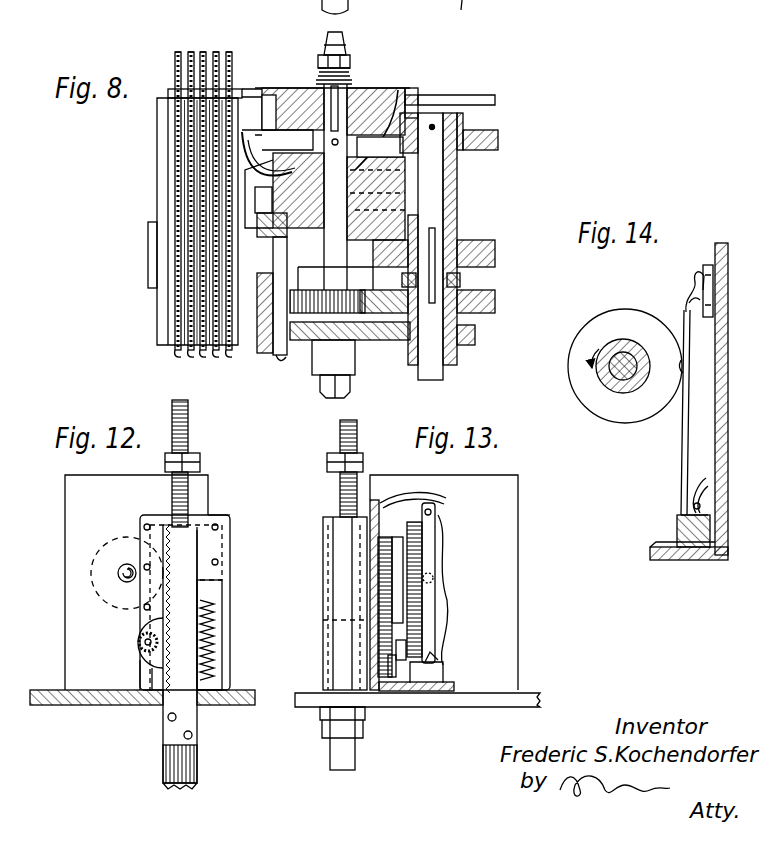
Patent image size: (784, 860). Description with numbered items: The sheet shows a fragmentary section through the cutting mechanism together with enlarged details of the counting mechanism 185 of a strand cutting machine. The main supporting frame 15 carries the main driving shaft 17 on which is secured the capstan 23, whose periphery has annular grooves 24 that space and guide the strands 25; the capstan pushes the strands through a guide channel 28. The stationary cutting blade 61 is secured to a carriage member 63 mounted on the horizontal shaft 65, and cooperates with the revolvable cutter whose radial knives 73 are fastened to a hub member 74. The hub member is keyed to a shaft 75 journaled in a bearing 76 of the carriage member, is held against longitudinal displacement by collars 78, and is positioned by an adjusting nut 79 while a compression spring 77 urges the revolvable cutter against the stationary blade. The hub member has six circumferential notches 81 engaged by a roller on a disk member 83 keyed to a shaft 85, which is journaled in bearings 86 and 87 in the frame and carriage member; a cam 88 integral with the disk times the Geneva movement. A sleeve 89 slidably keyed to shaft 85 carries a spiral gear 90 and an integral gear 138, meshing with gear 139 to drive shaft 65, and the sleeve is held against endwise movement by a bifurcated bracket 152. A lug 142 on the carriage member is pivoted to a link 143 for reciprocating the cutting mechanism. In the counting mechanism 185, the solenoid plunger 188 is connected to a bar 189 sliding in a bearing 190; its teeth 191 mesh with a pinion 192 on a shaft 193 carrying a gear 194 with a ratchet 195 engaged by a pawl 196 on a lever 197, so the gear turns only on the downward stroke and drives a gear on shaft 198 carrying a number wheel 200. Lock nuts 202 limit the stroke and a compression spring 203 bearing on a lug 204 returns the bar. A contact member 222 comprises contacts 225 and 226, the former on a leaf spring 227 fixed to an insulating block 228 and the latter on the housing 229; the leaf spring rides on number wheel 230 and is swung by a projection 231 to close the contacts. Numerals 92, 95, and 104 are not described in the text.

In FIG. 8, the main supporting frame 15 is at (312, 342).
In FIG. 12, the main supporting frame 15 is at (112, 705).
In FIG. 13, the main supporting frame 15 is at (488, 697).
In FIG. 8, the main driving shaft 17 is at (366, 338).
In FIG. 8, the capstan 23 is at (158, 208).
In FIG. 8, the annular grooves 24 is at (180, 352).
In FIG. 8, the strands 25 is at (229, 52).
In FIG. 8, the guide channel 28 is at (175, 182).
In FIG. 8, the stationary cutting blade 61 is at (171, 90).
In FIG. 8, the carriage member 63 is at (386, 103).
In FIG. 8, the horizontal shaft 65 is at (320, 50).
In FIG. 8, the knives 73 is at (242, 90).
In FIG. 8, the hub member 74 is at (404, 100).
In FIG. 8, the shaft 75 is at (400, 200).
In FIG. 8, the bearing 76 is at (415, 203).
In FIG. 8, the compression spring 77 is at (392, 88).
In FIG. 8, the collars 78 is at (300, 143).
In FIG. 8, the adjusting nut 79 is at (342, 73).
In FIG. 8, the circumferential notches 81 is at (263, 95).
In FIG. 8, the disk member 83 is at (486, 142).
In FIG. 8, the shaft 85 is at (436, 378).
In FIG. 8, the bearing 86 is at (456, 340).
In FIG. 8, the bearing 87 is at (456, 172).
In FIG. 8, the cam 88 is at (463, 122).
In FIG. 8, the sleeve 89 is at (460, 275).
In FIG. 8, the spiral gear 90 is at (494, 258).
In FIG. 8, the part 92 is at (484, 12).
In FIG. 8, the part 95 is at (434, 6).
In FIG. 8, the part 104 is at (532, 6).
In FIG. 8, the gear 138 is at (494, 308).
In FIG. 8, the gear 139 is at (318, 378).
In FIG. 8, the lug 142 is at (275, 250).
In FIG. 8, the link 143 is at (270, 350).
In FIG. 8, the bifurcated bracket 152 is at (460, 288).
In FIG. 12, the counting mechanism 185 is at (218, 506).
In FIG. 13, the counting mechanism 185 is at (521, 490).
In FIG. 12, the plunger 188 is at (198, 765).
In FIG. 13, the plunger 188 is at (343, 765).
In FIG. 12, the bar 189 is at (188, 643).
In FIG. 12, the bearing 190 is at (214, 690).
In FIG. 13, the bearing 190 is at (342, 673).
In FIG. 12, the teeth 191 is at (160, 527).
In FIG. 12, the pinion 192 is at (146, 660).
In FIG. 12, the shaft 193 is at (142, 643).
In FIG. 13, the gear 194 is at (395, 682).
In FIG. 13, the ratchet 195 is at (392, 680).
In FIG. 13, the pawl 196 is at (402, 680).
In FIG. 13, the lever 197 is at (381, 537).
In FIG. 14, the shaft 198 is at (617, 387).
In FIG. 12, the shaft 198 is at (125, 573).
In FIG. 13, the shaft 198 is at (428, 560).
In FIG. 13, the number wheel 200 is at (404, 533).
In FIG. 12, the lock nuts 202 is at (201, 470).
In FIG. 13, the lock nuts 202 is at (327, 462).
In FIG. 12, the compression spring 203 is at (212, 622).
In FIG. 12, the lug 204 is at (207, 582).
In FIG. 14, the contact member 222 is at (678, 275).
In FIG. 13, the contact member 222 is at (441, 520).
In FIG. 14, the contact 225 is at (689, 272).
In FIG. 14, the contact 226 is at (689, 302).
In FIG. 14, the leaf spring 227 is at (683, 477).
In FIG. 13, the leaf spring 227 is at (445, 618).
In FIG. 14, the insulating block 228 is at (677, 523).
In FIG. 13, the insulating block 228 is at (449, 668).
In FIG. 14, the housing 229 is at (716, 415).
In FIG. 13, the housing 229 is at (418, 502).
In FIG. 14, the number wheel 230 is at (594, 322).
In FIG. 14, the projection 231 is at (683, 355).